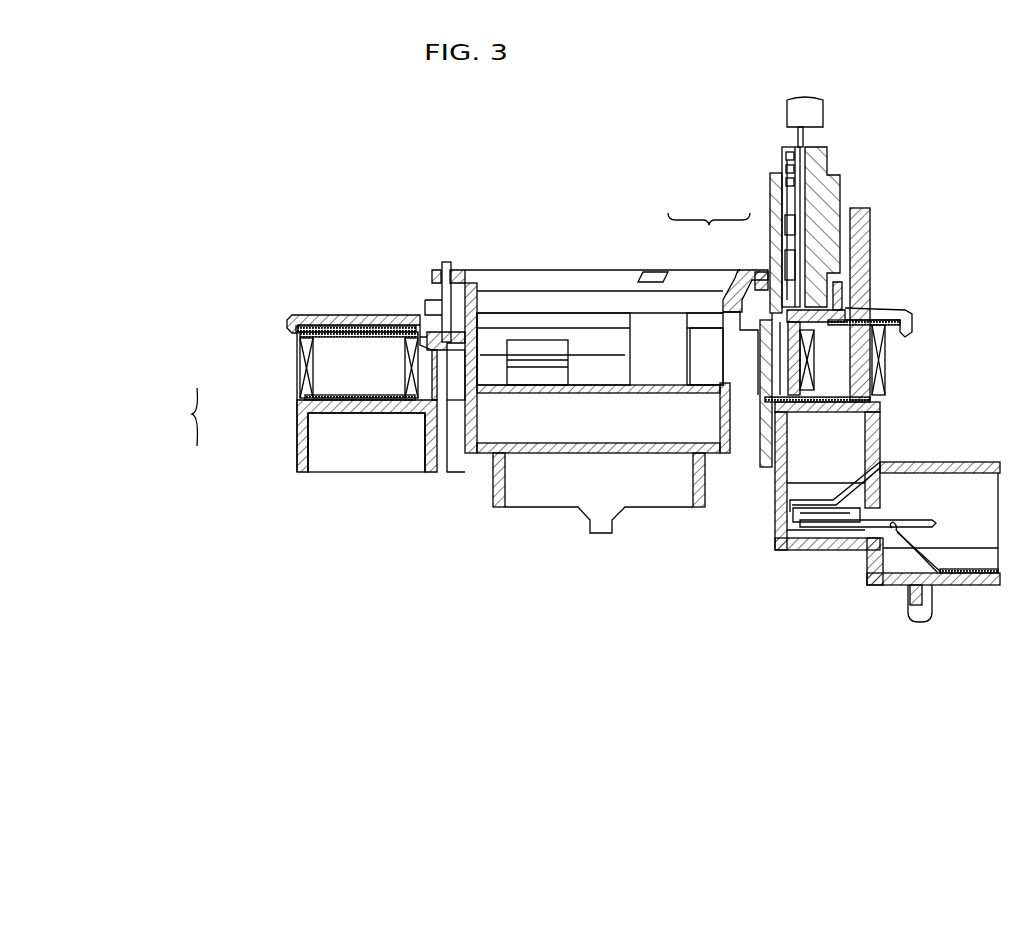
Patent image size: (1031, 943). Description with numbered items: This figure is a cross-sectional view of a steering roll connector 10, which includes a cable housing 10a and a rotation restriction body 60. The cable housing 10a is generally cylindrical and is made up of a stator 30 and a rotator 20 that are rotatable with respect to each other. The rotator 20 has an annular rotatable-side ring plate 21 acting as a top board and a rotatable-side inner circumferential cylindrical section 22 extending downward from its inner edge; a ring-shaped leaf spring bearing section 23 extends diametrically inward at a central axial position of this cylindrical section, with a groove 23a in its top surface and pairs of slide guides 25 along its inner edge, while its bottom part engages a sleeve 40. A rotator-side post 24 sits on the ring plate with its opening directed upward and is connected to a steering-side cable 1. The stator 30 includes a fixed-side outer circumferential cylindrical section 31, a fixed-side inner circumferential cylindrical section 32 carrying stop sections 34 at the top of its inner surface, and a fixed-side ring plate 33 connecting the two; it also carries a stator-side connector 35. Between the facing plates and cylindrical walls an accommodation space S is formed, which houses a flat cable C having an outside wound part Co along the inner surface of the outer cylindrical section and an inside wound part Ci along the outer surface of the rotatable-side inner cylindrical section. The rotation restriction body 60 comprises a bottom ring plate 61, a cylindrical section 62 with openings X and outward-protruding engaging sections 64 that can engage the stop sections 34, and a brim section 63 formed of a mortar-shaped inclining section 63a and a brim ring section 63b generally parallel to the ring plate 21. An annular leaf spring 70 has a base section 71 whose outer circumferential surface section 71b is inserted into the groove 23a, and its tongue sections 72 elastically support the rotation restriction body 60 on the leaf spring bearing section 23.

The steering roll connector 10 is at (253, 172).
The cable housing 10a is at (178, 417).
The rotator 20 is at (337, 325).
The stator 30 is at (323, 437).
The rotatable-side ring plate 21 is at (315, 322).
The rotatable-side inner circumferential cylindrical section 22 is at (400, 378).
The leaf spring bearing section 23 is at (482, 330).
The groove 23a is at (418, 374).
The rotator-side post 24 is at (840, 196).
The slide guides 25 is at (585, 373).
The fixed-side outer circumferential cylindrical section 31 is at (303, 462).
The fixed-side inner circumferential cylindrical section 32 is at (430, 462).
The fixed-side ring plate 33 is at (352, 420).
The stop sections 34 is at (456, 375).
The stator-side connector 35 is at (960, 462).
The sleeve 40 is at (512, 500).
The rotation restriction body 60 is at (556, 268).
The bottom ring plate 61 is at (720, 396).
The cylindrical section 62 is at (610, 300).
The brim section 63 is at (622, 248).
The inclining section 63a is at (700, 278).
The brim ring section 63b is at (748, 270).
The engaging sections 64 is at (480, 372).
The annular leaf spring 70 is at (440, 318).
The base section 71 is at (745, 330).
The outer circumferential surface section 71b is at (432, 345).
The tongue sections 72 is at (448, 300).
The steering-side cable 1 is at (790, 114).
The flat cable C is at (305, 316).
The inside wound part Ci is at (388, 420).
The outside wound part Co is at (855, 320).
The accommodation space S is at (355, 385).
The openings X is at (540, 325).